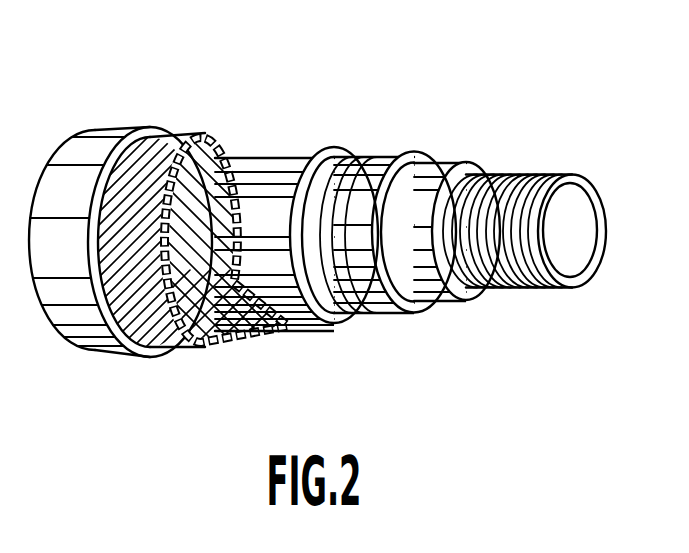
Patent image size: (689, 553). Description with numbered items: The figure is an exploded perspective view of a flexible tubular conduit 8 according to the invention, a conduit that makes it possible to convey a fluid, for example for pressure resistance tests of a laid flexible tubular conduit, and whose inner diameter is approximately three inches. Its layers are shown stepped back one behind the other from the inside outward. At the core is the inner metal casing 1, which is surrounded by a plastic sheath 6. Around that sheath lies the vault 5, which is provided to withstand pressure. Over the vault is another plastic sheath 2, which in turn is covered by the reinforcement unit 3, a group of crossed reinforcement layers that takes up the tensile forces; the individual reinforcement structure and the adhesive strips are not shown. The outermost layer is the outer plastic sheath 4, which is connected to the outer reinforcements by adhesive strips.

The inner metal casing 1 is at (521, 172).
The plastic sheath 2 is at (292, 297).
The reinforcement unit 3 is at (228, 343).
The outer plastic sheath 4 is at (113, 355).
The vault 5 is at (352, 160).
The plastic sheath 6 is at (433, 180).
The flexible tubular conduit 8 is at (238, 90).